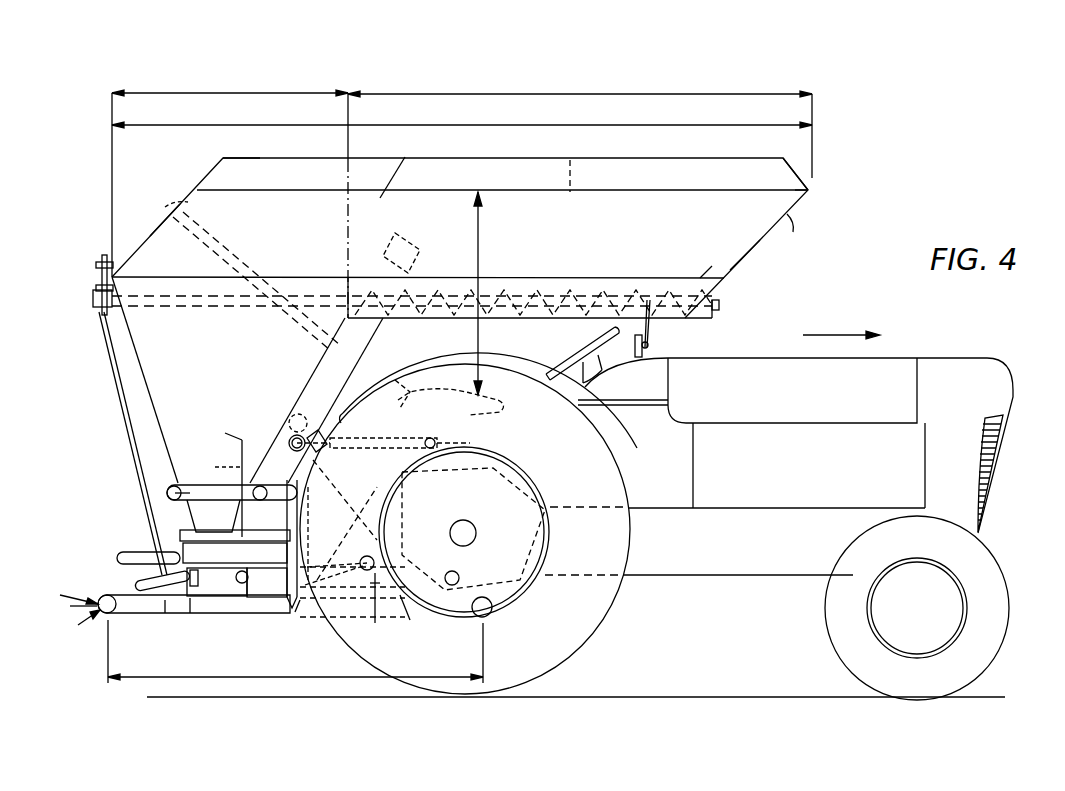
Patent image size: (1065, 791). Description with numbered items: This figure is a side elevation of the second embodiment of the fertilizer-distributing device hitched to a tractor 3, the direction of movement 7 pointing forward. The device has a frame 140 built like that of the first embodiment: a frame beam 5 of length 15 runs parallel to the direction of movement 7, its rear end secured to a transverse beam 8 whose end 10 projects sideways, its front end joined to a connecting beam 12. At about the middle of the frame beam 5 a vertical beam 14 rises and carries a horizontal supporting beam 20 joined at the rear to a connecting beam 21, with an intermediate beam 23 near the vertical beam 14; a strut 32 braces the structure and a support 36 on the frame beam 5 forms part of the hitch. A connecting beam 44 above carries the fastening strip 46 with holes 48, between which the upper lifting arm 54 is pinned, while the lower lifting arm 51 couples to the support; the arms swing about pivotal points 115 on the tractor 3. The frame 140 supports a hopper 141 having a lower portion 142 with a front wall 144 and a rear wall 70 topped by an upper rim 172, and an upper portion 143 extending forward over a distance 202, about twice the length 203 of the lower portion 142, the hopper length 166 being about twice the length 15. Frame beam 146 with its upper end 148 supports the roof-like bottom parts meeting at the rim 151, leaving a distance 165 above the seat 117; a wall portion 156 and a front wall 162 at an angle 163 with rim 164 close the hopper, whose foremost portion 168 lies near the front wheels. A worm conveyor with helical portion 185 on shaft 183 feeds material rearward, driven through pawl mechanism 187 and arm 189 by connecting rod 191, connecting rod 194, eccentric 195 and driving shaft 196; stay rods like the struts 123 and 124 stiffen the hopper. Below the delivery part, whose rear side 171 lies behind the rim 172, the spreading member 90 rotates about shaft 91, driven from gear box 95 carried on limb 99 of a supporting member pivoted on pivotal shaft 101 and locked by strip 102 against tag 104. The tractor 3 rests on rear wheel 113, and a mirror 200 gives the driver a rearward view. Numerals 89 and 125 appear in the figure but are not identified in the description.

The tractor 3 is at (955, 356).
The frame beam 5 is at (407, 619).
The direction of movement 7 is at (836, 332).
The transverse beam 8 is at (76, 622).
The end of transverse beam 10 is at (72, 607).
The connecting beam 12 is at (494, 603).
The vertical beam 14 is at (348, 505).
The length of frame beams 15 is at (255, 672).
The horizontal supporting beam 20 is at (222, 500).
The connecting beam 21 is at (172, 484).
The intermediate beam 23 is at (227, 468).
The strut 32 is at (372, 492).
The support 36 is at (256, 612).
The connecting beam 44 is at (290, 416).
The fastening strip 46 is at (277, 436).
The holes 48 is at (227, 474).
The lower lifting arm 51 is at (370, 605).
The upper lifting arm 54 is at (378, 436).
The rear wall 70 is at (196, 185).
The plate 89 is at (180, 535).
The spreading member 90 is at (114, 556).
The shaft 91 is at (280, 532).
The gear box 95 is at (222, 612).
The limb 99 is at (194, 605).
The pivotal shaft 101 is at (295, 614).
The strip 102 is at (352, 562).
The tag 104 is at (138, 586).
The rear wheel 113 is at (595, 628).
The pivotal points 115 is at (460, 572).
The seat 117 is at (505, 418).
The strut 123 is at (220, 250).
The strut 124 is at (285, 348).
The hinge 125 is at (166, 196).
The frame 140 is at (64, 592).
The hopper 141 is at (150, 243).
The lower portion 142 is at (148, 390).
The upper portion 143 is at (397, 167).
The front wall 144 is at (312, 376).
The frame beam 146 is at (360, 340).
The upper end 148 is at (420, 246).
The rim 151 is at (578, 154).
The inclined wall portion 156 is at (692, 272).
The front wall 162 is at (745, 260).
The angle 163 is at (790, 240).
The rim 164 is at (808, 172).
The distance 165 is at (480, 270).
The length of hopper 166 is at (466, 121).
The foremost portion 168 is at (812, 192).
The rear side of delivery part 171 is at (165, 494).
The upper rim 172 is at (228, 158).
The shaft 183 is at (722, 304).
The helical portion 185 is at (585, 284).
The pawl mechanism 187 is at (100, 305).
The arm 189 is at (98, 268).
The connecting rod 191 is at (110, 362).
The connecting rod 194 is at (190, 574).
The eccentric 195 is at (166, 614).
The driving shaft 196 is at (192, 615).
The mirror 200 is at (652, 343).
The distance 202 is at (542, 88).
The length 203 is at (238, 88).